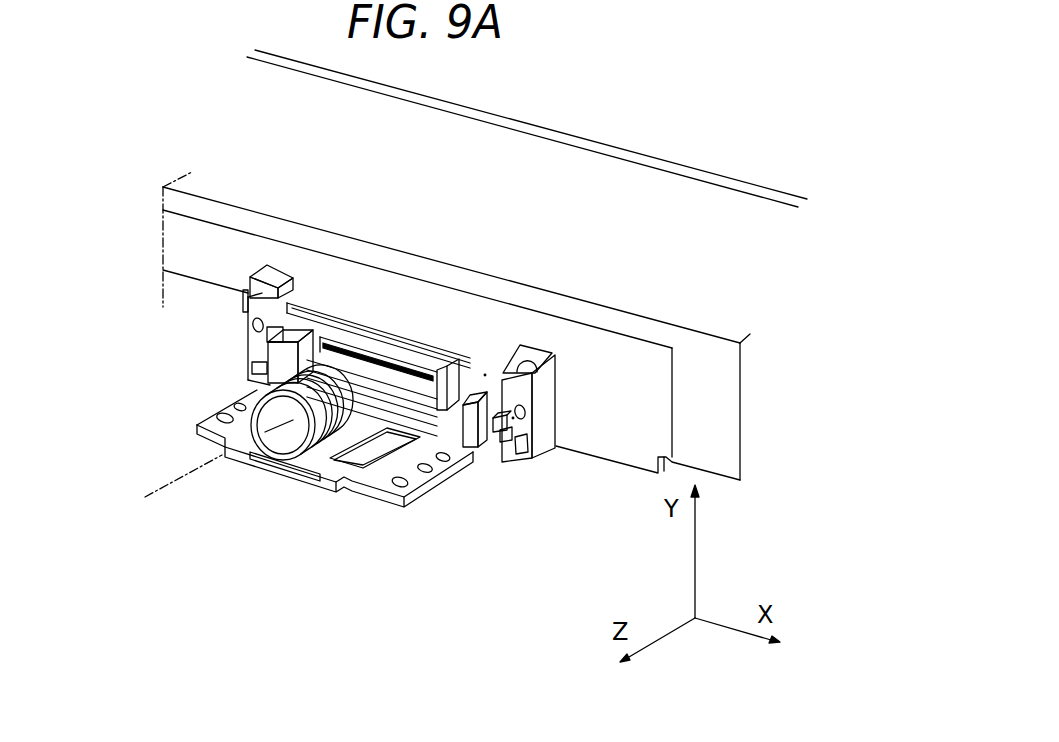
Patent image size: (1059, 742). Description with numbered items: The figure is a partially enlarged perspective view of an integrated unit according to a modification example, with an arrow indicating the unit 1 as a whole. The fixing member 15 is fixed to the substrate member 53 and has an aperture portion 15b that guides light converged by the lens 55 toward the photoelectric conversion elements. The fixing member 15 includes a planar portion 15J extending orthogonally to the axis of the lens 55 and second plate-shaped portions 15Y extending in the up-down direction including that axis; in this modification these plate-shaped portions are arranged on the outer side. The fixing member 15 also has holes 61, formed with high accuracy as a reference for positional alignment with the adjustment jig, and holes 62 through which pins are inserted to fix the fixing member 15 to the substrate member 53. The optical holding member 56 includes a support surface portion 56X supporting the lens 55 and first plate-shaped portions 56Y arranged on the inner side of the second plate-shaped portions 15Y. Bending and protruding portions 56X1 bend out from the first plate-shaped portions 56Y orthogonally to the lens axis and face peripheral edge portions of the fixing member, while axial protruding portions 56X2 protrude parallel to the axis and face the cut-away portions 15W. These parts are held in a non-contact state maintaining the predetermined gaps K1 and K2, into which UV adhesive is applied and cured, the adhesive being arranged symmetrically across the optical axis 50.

The image forming apparatus 1 is at (600, 126).
The fixing member 15 is at (372, 282).
The aperture portion 15b is at (400, 329).
The planar portion 15J is at (457, 372).
The cut-away portions 15W is at (502, 428).
The second plate-shaped portions 15Y is at (462, 443).
The optical axis 50 is at (188, 474).
The substrate member 53 is at (352, 181).
The lens 55 is at (265, 452).
The optical holding member 56 is at (384, 490).
The support surface portion 56X is at (380, 469).
The bending and protruding portions 56X1 is at (272, 268).
The axial protruding portions 56X2 is at (507, 440).
The first plate-shaped portions 56Y is at (305, 345).
The holes 61 is at (253, 328).
The holes 62 is at (253, 370).
The gap K1 is at (485, 375).
The gap K2 is at (513, 418).